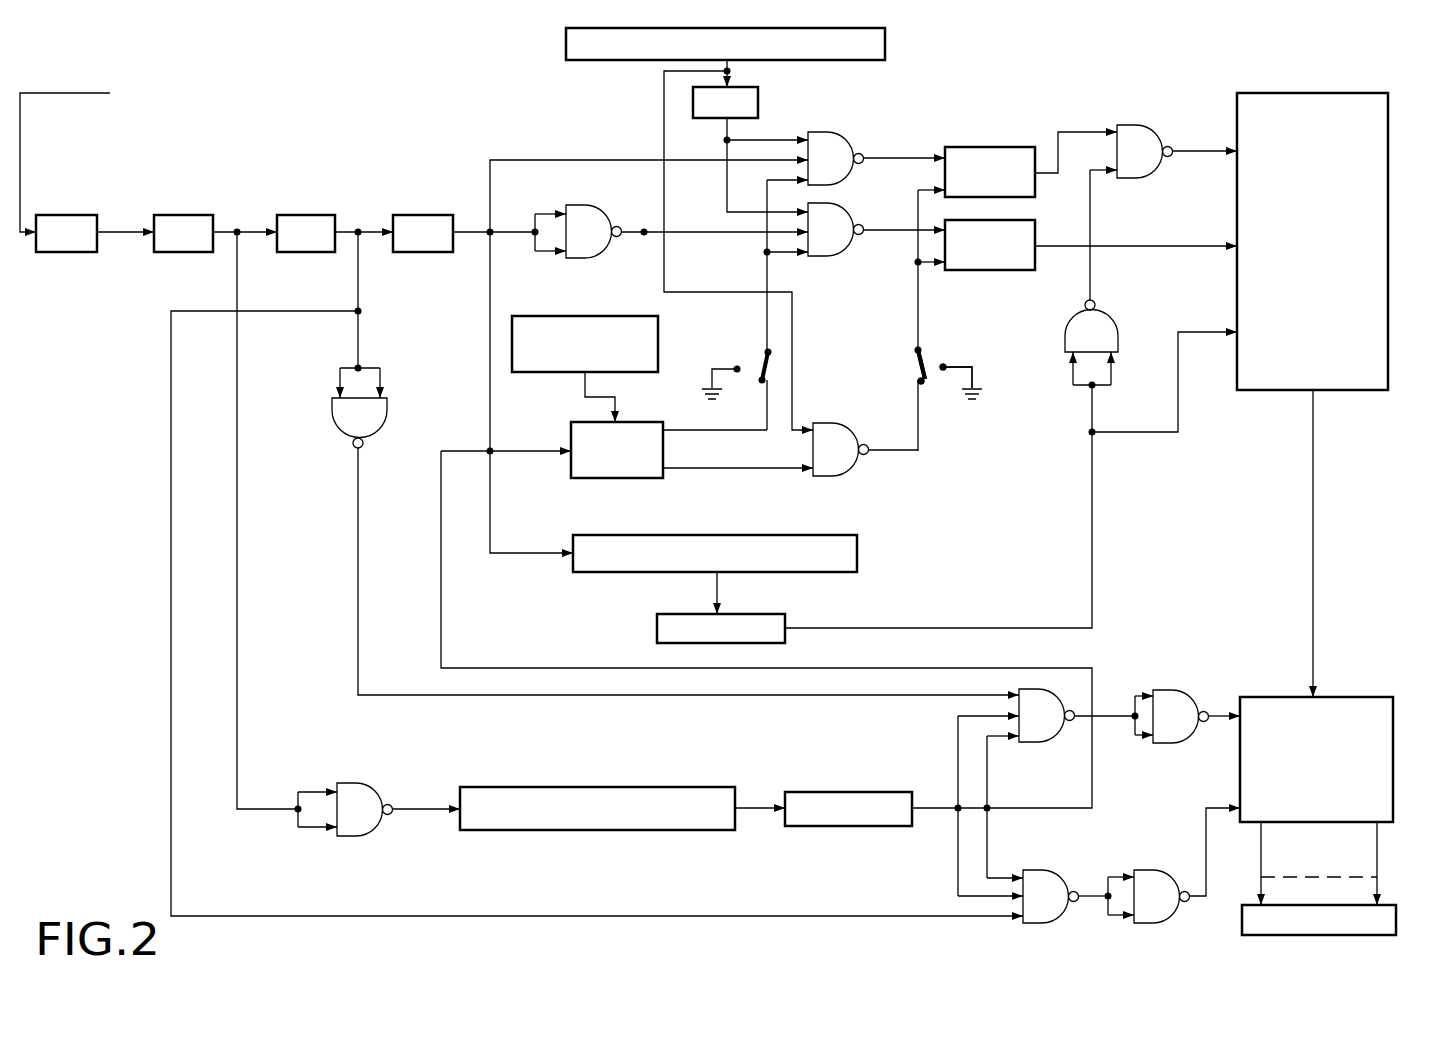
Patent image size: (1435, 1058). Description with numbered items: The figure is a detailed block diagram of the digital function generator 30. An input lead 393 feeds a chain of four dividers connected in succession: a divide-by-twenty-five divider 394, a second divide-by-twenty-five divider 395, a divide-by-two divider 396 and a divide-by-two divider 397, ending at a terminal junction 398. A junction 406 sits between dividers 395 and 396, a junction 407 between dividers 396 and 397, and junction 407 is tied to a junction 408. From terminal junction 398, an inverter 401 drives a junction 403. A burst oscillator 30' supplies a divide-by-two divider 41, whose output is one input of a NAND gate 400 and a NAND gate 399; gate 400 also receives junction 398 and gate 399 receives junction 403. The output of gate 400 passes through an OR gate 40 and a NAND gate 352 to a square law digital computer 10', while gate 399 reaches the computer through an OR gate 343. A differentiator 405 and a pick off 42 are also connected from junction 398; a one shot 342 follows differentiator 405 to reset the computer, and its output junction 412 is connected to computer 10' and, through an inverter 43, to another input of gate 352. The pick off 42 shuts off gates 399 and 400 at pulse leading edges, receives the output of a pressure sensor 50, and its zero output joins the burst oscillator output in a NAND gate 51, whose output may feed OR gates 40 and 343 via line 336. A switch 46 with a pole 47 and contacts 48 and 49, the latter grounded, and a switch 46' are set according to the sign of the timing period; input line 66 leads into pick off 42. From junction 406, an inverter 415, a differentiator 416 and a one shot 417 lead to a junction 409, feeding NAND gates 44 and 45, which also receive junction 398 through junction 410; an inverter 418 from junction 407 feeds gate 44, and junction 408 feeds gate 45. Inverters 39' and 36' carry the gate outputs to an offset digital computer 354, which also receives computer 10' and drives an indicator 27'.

The digital function generator 30 is at (104, 534).
The input lead 393 is at (21, 172).
The divide-by-twenty-five divider 394 is at (58, 253).
The divide-by-twenty-five divider 395 is at (176, 214).
The junction 406 is at (237, 231).
The divide-by-two divider 396 is at (307, 215).
The junction 407 is at (368, 215).
The divide-by-two divider 397 is at (427, 215).
The terminal junction 398 is at (490, 237).
The inverter 401 is at (590, 258).
The junction 403 is at (644, 231).
The burst oscillator 30' is at (756, 57).
The divide-by-two divider 41 is at (758, 101).
The oscillator output line 336 is at (722, 142).
The NAND gate 400 is at (850, 151).
The NAND gate 399 is at (840, 257).
The OR gate 40 is at (960, 147).
The OR gate 343 is at (985, 271).
The NAND gate 352 is at (1155, 139).
The inverter 43 is at (1116, 331).
The square law digital computer 10' is at (1298, 273).
The junction 412 is at (1090, 434).
The pressure sensor 50 is at (585, 316).
The pick off 42 is at (571, 427).
The input line 66 is at (526, 455).
The switch 46' is at (729, 305).
The switch 46 is at (907, 320).
The pole 47 is at (922, 350).
The contact 48 is at (918, 384).
The contact 49 is at (948, 366).
The NAND gate 51 is at (846, 474).
The differentiator 405 is at (700, 535).
The one shot 342 is at (657, 629).
The junction 408 is at (361, 311).
The inverter 418 is at (335, 427).
The inverter 415 is at (365, 783).
The differentiator 416 is at (487, 831).
The one shot 417 is at (822, 792).
The junction 409 is at (957, 806).
The junction 410 is at (989, 810).
The NAND gate 44 is at (1040, 743).
The inverter 39' is at (1158, 695).
The NAND gate 45 is at (1040, 923).
The inverter 36' is at (1160, 865).
The offset digital computer 354 is at (1252, 697).
The indicator 27' is at (1282, 884).